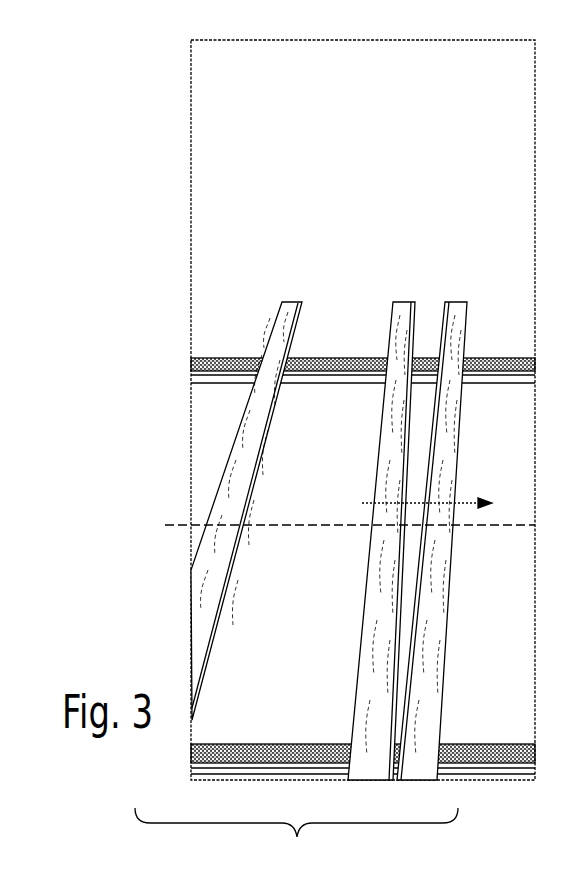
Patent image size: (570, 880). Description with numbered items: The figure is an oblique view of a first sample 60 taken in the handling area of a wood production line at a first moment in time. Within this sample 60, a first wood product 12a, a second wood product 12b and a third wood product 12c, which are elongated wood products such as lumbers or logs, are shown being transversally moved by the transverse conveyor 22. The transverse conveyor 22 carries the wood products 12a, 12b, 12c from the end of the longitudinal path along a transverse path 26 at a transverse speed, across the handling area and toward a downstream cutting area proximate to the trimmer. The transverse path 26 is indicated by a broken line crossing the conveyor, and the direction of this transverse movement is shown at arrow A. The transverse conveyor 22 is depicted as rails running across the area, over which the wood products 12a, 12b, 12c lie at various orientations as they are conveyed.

The transverse conveyor 22 is at (215, 348).
The first wood product 12a is at (435, 640).
The second wood product 12b is at (383, 604).
The third wood product 12c is at (203, 583).
The transverse path 26 is at (171, 522).
The arrow indicating direction of transverse movement A is at (441, 500).
The first sample 60 is at (296, 839).